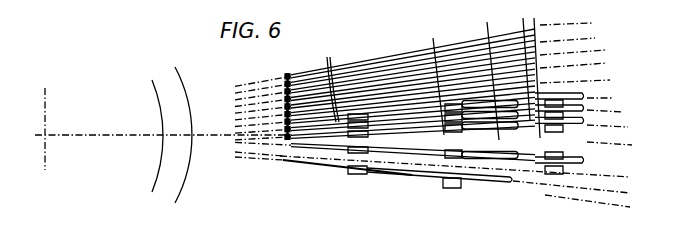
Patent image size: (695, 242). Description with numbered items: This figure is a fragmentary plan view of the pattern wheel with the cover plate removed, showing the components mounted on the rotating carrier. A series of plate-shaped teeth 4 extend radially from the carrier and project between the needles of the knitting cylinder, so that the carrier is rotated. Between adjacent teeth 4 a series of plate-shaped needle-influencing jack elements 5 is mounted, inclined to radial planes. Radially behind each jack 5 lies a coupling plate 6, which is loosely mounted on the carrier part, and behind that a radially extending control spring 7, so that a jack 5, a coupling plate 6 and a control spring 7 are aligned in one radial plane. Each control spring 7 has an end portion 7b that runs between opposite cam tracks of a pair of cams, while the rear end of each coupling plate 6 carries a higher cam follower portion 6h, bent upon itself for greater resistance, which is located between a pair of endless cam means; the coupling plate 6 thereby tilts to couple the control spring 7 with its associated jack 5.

The plate-shaped teeth 4 is at (585, 153).
The needle-influencing jack element 5 is at (558, 175).
The coupling plate 6 is at (452, 189).
The cam follower portion 6h is at (356, 175).
The control spring 7 is at (334, 164).
The end portion 7b is at (496, 181).